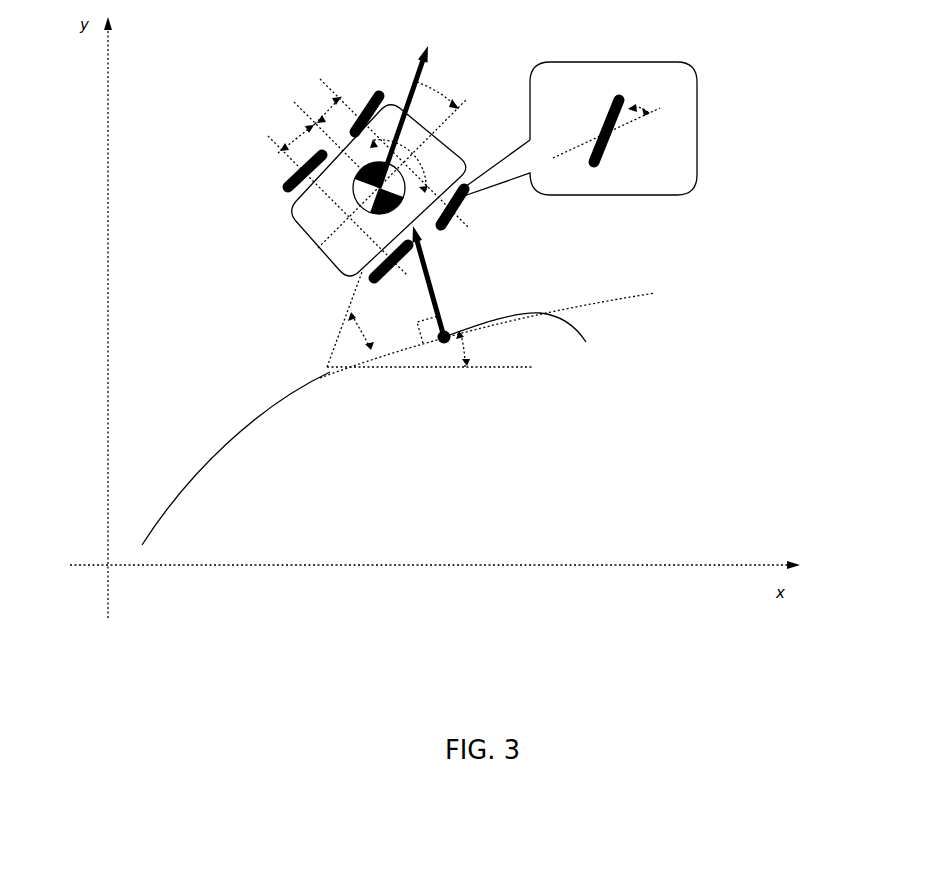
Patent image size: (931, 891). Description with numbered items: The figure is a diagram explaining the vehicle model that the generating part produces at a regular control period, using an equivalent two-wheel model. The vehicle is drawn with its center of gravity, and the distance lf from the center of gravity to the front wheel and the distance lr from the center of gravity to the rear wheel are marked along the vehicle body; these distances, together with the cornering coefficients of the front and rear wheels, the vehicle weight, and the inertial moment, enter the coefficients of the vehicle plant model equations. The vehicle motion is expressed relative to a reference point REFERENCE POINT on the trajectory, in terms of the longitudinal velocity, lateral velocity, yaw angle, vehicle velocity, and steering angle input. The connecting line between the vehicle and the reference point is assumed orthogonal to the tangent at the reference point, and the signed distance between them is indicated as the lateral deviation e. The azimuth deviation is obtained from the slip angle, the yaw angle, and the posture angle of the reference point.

The lateral error to reference point e is at (435, 281).
The distance from the center of gravity to the front wheel lf is at (319, 106).
The distance from the center of gravity to the rear wheel lr is at (289, 135).
The reference point REFERENCE POINT is at (412, 378).